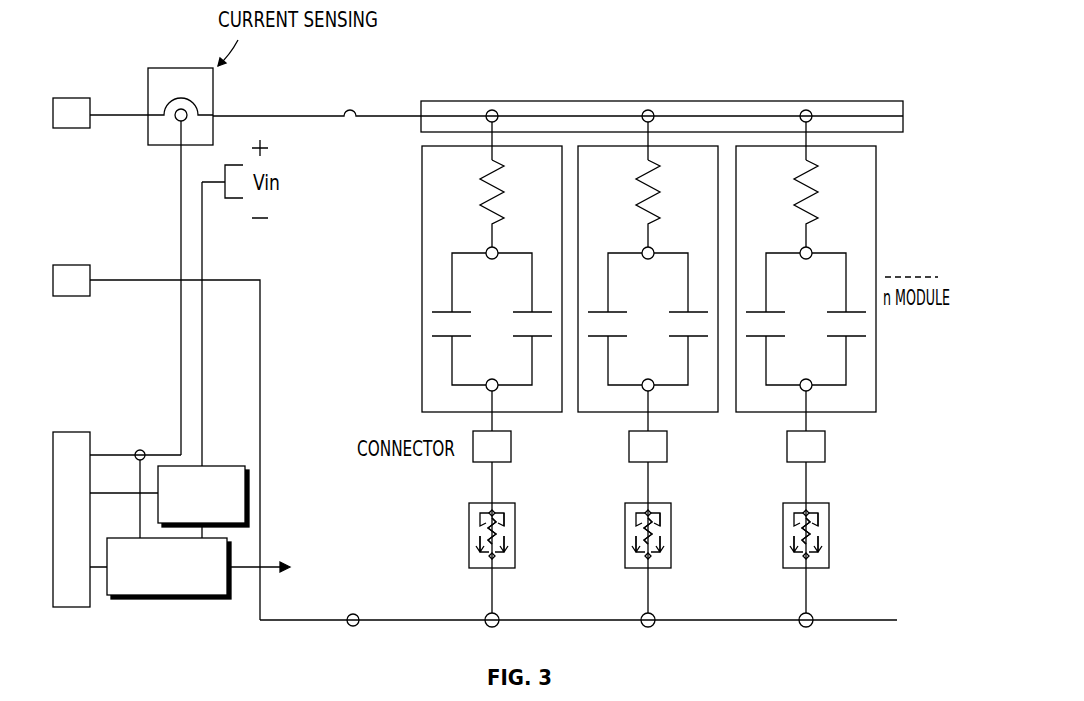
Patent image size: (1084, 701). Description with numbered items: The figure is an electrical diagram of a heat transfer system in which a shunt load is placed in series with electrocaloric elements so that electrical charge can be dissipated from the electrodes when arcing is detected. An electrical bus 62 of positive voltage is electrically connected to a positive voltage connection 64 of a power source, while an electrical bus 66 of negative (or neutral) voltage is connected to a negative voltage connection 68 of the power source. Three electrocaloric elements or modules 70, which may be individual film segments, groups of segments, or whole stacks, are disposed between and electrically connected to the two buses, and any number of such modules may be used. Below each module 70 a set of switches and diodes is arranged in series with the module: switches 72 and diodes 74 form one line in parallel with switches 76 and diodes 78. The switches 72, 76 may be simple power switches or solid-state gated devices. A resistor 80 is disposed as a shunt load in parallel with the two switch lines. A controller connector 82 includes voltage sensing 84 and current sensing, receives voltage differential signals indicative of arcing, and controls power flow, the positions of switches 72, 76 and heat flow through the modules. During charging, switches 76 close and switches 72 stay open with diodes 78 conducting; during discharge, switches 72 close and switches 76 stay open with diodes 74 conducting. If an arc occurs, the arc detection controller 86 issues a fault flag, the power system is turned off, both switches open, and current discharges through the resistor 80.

The electrical bus 62 is at (395, 113).
The positive voltage connection 64 is at (73, 98).
The electrical bus 66 is at (402, 621).
The negative voltage connection 68 is at (73, 265).
The electrocaloric element or module 70 is at (522, 146).
The switch 72 is at (472, 522).
The diode 74 is at (479, 556).
The switch 76 is at (504, 522).
The diode 78 is at (508, 552).
The resistor 80 is at (482, 535).
The controller connector 82 is at (75, 608).
The voltage sensing 84 is at (215, 466).
The arc detection controller 86 is at (182, 597).